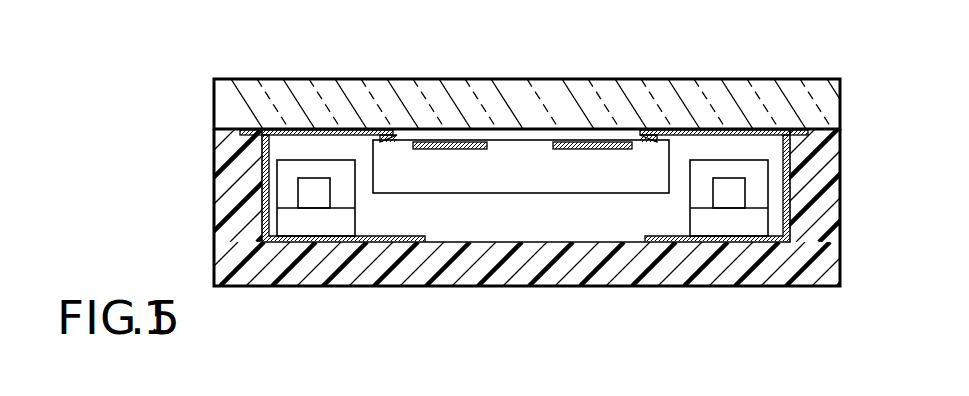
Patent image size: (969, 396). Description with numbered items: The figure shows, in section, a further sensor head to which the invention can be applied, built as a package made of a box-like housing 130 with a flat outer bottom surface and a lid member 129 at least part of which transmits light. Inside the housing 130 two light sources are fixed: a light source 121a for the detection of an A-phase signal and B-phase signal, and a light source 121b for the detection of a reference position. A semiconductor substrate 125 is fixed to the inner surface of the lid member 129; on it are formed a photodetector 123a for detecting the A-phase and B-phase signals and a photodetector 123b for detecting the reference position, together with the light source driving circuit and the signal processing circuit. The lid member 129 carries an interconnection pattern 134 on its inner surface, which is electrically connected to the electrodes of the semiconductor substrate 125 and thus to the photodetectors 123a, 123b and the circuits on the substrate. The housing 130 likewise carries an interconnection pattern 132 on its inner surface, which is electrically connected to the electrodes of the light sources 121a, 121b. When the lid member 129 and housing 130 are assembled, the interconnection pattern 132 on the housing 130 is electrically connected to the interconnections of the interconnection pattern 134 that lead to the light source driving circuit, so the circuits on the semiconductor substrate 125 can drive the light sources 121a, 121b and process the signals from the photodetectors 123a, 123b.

The lid member 129 is at (780, 102).
The housing 130 is at (243, 228).
The interconnection pattern 134 is at (258, 130).
The interconnection pattern 132 is at (297, 242).
The semiconductor substrate 125 is at (522, 183).
The photodetector 123a is at (597, 142).
The photodetector 123b is at (445, 142).
The light source 121a is at (755, 225).
The light source 121b is at (288, 186).